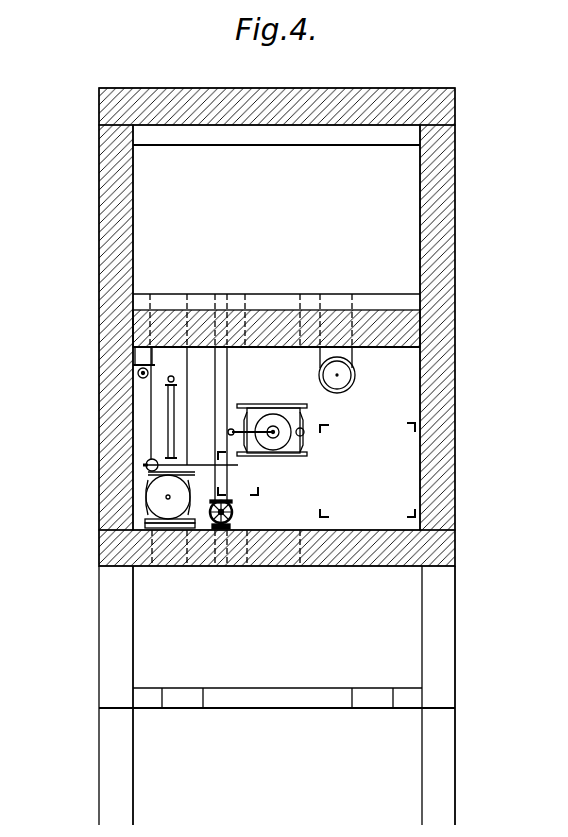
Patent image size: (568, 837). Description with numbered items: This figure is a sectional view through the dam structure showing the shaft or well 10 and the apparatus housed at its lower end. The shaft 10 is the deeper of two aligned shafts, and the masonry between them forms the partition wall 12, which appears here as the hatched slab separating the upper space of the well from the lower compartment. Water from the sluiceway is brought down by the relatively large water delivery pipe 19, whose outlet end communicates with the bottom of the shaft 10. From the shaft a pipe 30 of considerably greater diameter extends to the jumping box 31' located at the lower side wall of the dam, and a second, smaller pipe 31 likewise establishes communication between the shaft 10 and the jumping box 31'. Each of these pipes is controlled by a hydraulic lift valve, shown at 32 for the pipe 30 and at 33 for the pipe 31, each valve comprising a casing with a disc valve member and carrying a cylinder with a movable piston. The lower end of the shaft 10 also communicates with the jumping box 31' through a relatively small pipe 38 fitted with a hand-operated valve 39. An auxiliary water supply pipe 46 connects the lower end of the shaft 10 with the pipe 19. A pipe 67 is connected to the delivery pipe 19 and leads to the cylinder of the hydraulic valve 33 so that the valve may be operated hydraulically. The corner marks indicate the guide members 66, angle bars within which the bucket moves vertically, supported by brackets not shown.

The shaft or well 10 is at (276, 209).
The partition wall 12 is at (281, 318).
The water delivery pipe 19 is at (350, 350).
The pipe 30 is at (290, 392).
The second pipe 31 is at (145, 409).
The jumping box 31' is at (277, 695).
The hydraulic lift valve 32 is at (272, 420).
The hydraulic lift valve 33 is at (157, 500).
The relatively small pipe 38 is at (223, 420).
The hand-operated valve 39 is at (235, 512).
The auxiliary water supply pipe 46 is at (143, 353).
The guide members 66 is at (412, 427).
The pipe 67 is at (174, 432).